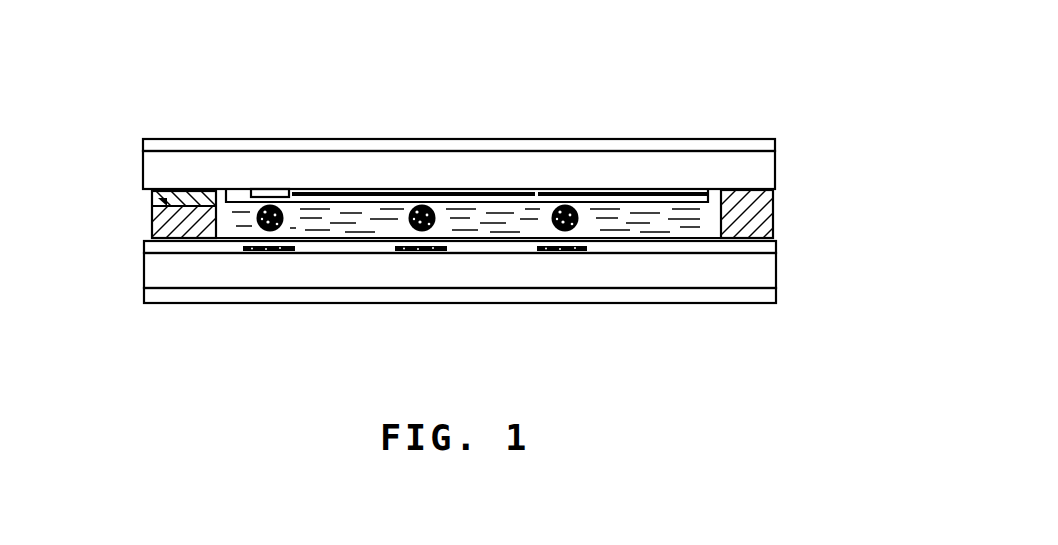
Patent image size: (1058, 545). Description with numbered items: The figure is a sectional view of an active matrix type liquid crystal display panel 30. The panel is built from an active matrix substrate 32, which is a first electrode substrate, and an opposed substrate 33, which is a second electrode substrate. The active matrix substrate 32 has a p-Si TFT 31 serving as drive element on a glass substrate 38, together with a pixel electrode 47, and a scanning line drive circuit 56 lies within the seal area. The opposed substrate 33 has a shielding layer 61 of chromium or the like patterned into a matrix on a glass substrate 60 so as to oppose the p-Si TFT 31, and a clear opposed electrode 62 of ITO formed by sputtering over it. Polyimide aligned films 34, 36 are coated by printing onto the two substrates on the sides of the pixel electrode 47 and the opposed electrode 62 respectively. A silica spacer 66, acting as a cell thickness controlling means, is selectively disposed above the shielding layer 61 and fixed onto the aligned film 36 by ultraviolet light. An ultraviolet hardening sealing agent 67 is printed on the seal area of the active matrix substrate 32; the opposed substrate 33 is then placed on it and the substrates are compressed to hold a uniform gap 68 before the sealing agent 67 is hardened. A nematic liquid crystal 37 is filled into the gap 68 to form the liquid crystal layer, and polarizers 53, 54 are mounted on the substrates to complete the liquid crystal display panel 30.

The liquid crystal display panel 30 is at (520, 108).
The p-Si TFT 31 is at (273, 193).
The active matrix substrate 32 is at (855, 158).
The opposed substrate 33 is at (860, 262).
The aligned film 34 is at (235, 192).
The aligned film 36 is at (317, 238).
The nematic liquid crystal 37 is at (653, 225).
The glass substrate 38 is at (768, 172).
The pixel electrode 47 is at (360, 192).
The polarizer 53 is at (765, 145).
The polarizer 54 is at (778, 297).
The scanning line drive circuit 56 is at (152, 202).
The glass substrate 60 is at (770, 270).
The shielding layer 61 is at (425, 252).
The opposed electrode 62 is at (770, 247).
The silica spacer 66 is at (547, 220).
The sealing agent 67 is at (150, 227).
The gap 68 is at (712, 213).